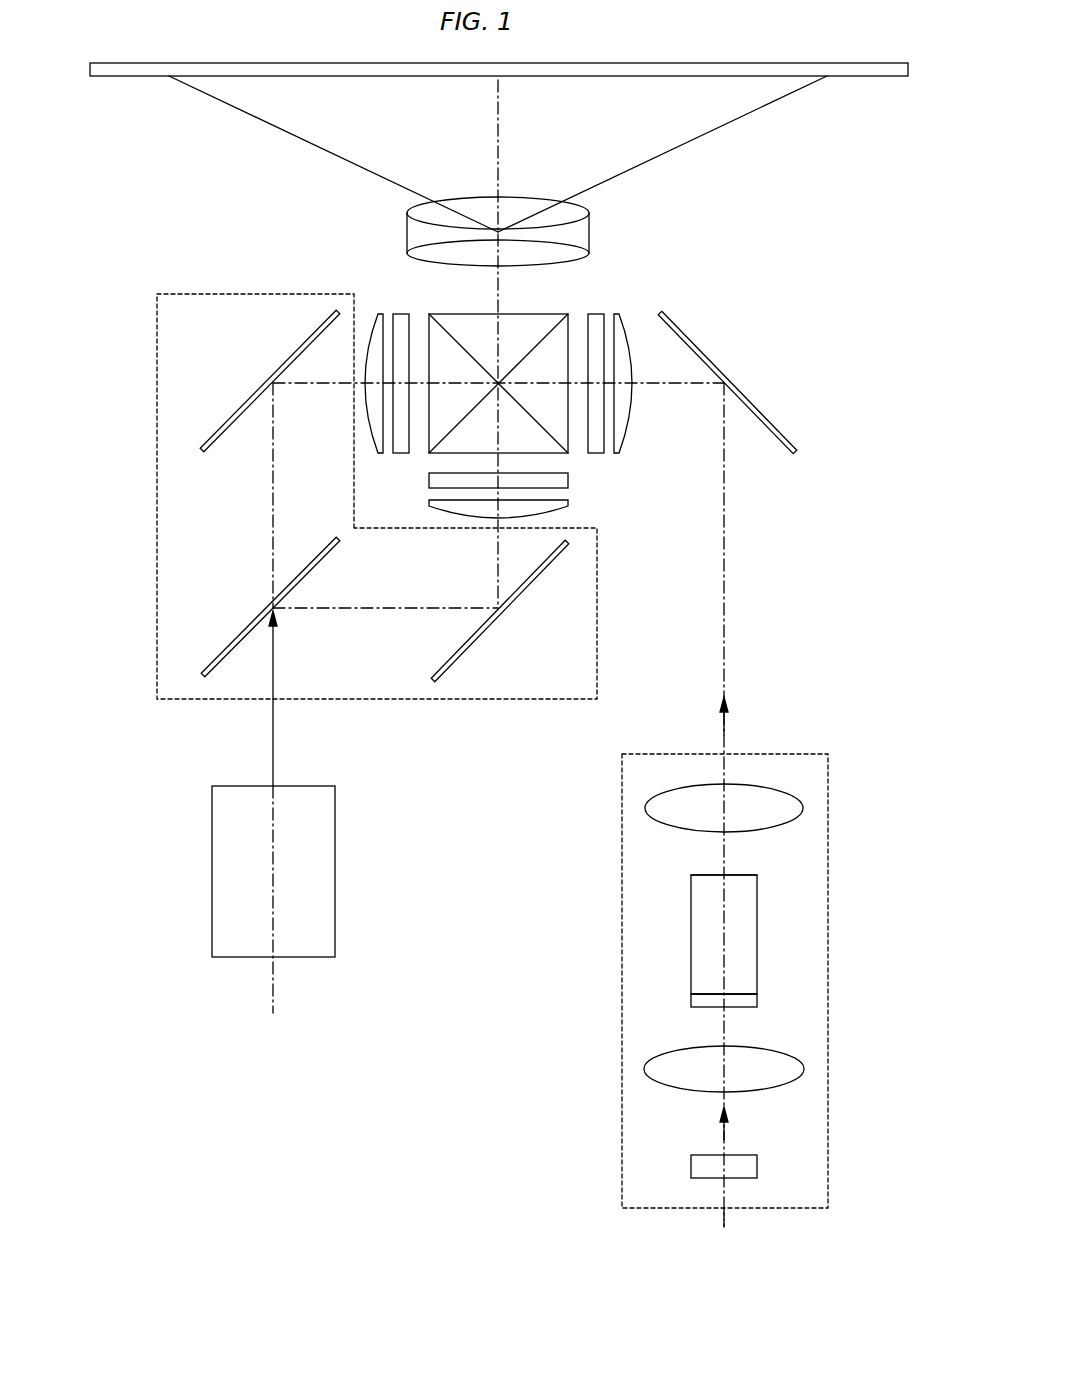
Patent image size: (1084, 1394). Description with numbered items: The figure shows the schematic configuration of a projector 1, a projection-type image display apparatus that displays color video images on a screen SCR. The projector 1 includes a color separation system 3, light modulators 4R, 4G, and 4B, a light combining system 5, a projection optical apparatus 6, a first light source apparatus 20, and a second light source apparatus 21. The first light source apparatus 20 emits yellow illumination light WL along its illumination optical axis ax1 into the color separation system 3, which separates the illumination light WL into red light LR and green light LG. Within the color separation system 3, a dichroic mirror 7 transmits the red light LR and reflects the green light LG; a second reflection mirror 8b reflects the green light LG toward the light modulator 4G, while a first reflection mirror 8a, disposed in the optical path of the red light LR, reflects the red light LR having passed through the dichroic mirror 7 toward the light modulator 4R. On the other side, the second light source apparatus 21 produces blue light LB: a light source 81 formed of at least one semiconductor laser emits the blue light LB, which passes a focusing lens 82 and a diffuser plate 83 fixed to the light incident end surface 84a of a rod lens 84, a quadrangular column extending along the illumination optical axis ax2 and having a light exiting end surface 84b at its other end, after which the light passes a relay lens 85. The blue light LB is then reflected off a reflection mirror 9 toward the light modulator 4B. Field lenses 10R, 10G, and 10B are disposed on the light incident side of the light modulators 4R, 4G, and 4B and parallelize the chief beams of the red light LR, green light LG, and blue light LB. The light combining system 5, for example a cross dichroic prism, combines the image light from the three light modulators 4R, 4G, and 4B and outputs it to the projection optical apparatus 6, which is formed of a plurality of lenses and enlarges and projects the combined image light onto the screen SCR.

The projector 1 is at (848, 268).
The screen SCR is at (873, 78).
The projection optical apparatus 6 is at (482, 208).
The light combining system 5 is at (522, 323).
The light modulator 4R is at (401, 312).
The light modulator 4G is at (432, 481).
The light modulator 4B is at (596, 312).
The field lens 10R is at (375, 312).
The field lens 10G is at (433, 506).
The field lens 10B is at (621, 312).
The reflection mirror 9 is at (753, 403).
The color separation system 3 is at (155, 442).
The first reflection mirror 8a is at (247, 400).
The second reflection mirror 8b is at (475, 643).
The dichroic mirror 7 is at (235, 637).
The red light LR is at (272, 522).
The green light LG is at (497, 570).
The blue light LB is at (727, 548).
The illumination light WL is at (275, 670).
The first light source apparatus 20 is at (335, 803).
The illumination optical axis ax1 is at (273, 983).
The second light source apparatus 21 is at (620, 797).
The relay lens 85 is at (793, 805).
The rod lens 84 is at (745, 933).
The light exiting end surface 84b is at (712, 875).
The light incident end surface 84a is at (705, 994).
The diffuser plate 83 is at (747, 1002).
The focusing lens 82 is at (793, 1068).
The light source 81 is at (745, 1170).
The illumination optical axis ax2 is at (726, 1220).